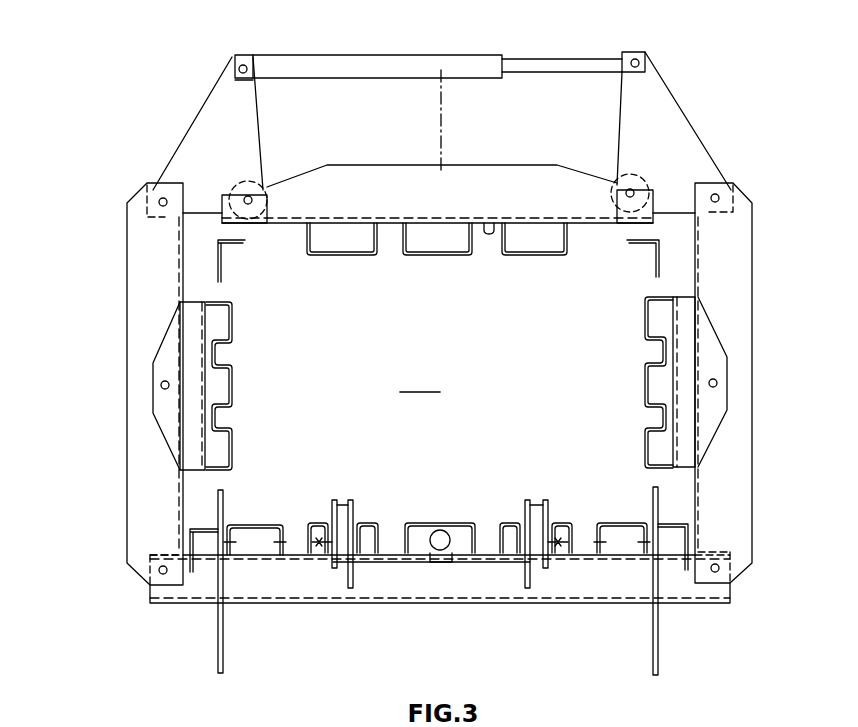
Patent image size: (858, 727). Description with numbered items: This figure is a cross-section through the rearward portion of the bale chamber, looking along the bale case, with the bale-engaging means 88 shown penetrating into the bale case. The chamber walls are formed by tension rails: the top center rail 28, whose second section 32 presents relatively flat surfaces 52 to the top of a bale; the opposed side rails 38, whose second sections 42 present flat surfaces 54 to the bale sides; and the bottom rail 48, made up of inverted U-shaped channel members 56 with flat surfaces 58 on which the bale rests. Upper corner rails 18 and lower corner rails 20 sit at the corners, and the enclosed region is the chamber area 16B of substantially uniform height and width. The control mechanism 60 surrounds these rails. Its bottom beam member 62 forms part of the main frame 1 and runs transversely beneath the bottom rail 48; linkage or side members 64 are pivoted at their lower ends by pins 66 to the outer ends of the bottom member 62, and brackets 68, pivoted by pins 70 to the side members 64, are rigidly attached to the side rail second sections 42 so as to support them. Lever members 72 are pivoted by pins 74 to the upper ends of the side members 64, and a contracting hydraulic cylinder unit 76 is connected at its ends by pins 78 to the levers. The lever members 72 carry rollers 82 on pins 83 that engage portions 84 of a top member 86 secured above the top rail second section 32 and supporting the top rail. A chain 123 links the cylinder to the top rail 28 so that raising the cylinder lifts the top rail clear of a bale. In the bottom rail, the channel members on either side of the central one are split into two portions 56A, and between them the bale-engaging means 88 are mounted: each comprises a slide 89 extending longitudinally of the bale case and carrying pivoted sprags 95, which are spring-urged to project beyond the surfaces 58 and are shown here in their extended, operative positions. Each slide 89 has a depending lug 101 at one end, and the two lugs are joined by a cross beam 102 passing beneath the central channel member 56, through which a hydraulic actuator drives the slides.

The main frame 1 is at (217, 650).
The upper corner rails 18 is at (222, 265).
The lower corner rails 20 is at (219, 492).
The top center rail 28 is at (488, 207).
The second section of top rail 32 is at (486, 236).
The side rails 38 is at (439, 383).
The second section of side rail 42 is at (212, 352).
The bottom rail 48 is at (428, 507).
The flat surfaces of top rail sections 52 is at (430, 256).
The flat surfaces of side rail sections 54 is at (232, 332).
The channel members 56 is at (258, 535).
The split channel member portions 56A is at (312, 537).
The flat surfaces of channel members 58 is at (317, 525).
The control mechanism 60 is at (712, 75).
The bottom beam member 62 is at (281, 605).
The linkage or side members 64 is at (125, 265).
The pins 66 is at (160, 572).
The brackets 68 is at (177, 325).
The pins 70 is at (165, 385).
The lever members 72 is at (193, 125).
The pins 74 is at (158, 195).
The hydraulic cylinder unit 76 is at (414, 58).
The pins 78 is at (240, 63).
The rollers 82 is at (265, 188).
The pins 83 is at (245, 197).
The portions of top member 84 is at (285, 215).
The top member 86 is at (362, 165).
The bale-engaging means 88 is at (372, 515).
The slides 89 is at (342, 502).
The sprags 95 is at (330, 522).
The depending lugs 101 is at (350, 578).
The cross beam 102 is at (411, 565).
The chain 123 is at (441, 119).
The chamber area of uniform height and width 16B is at (418, 381).